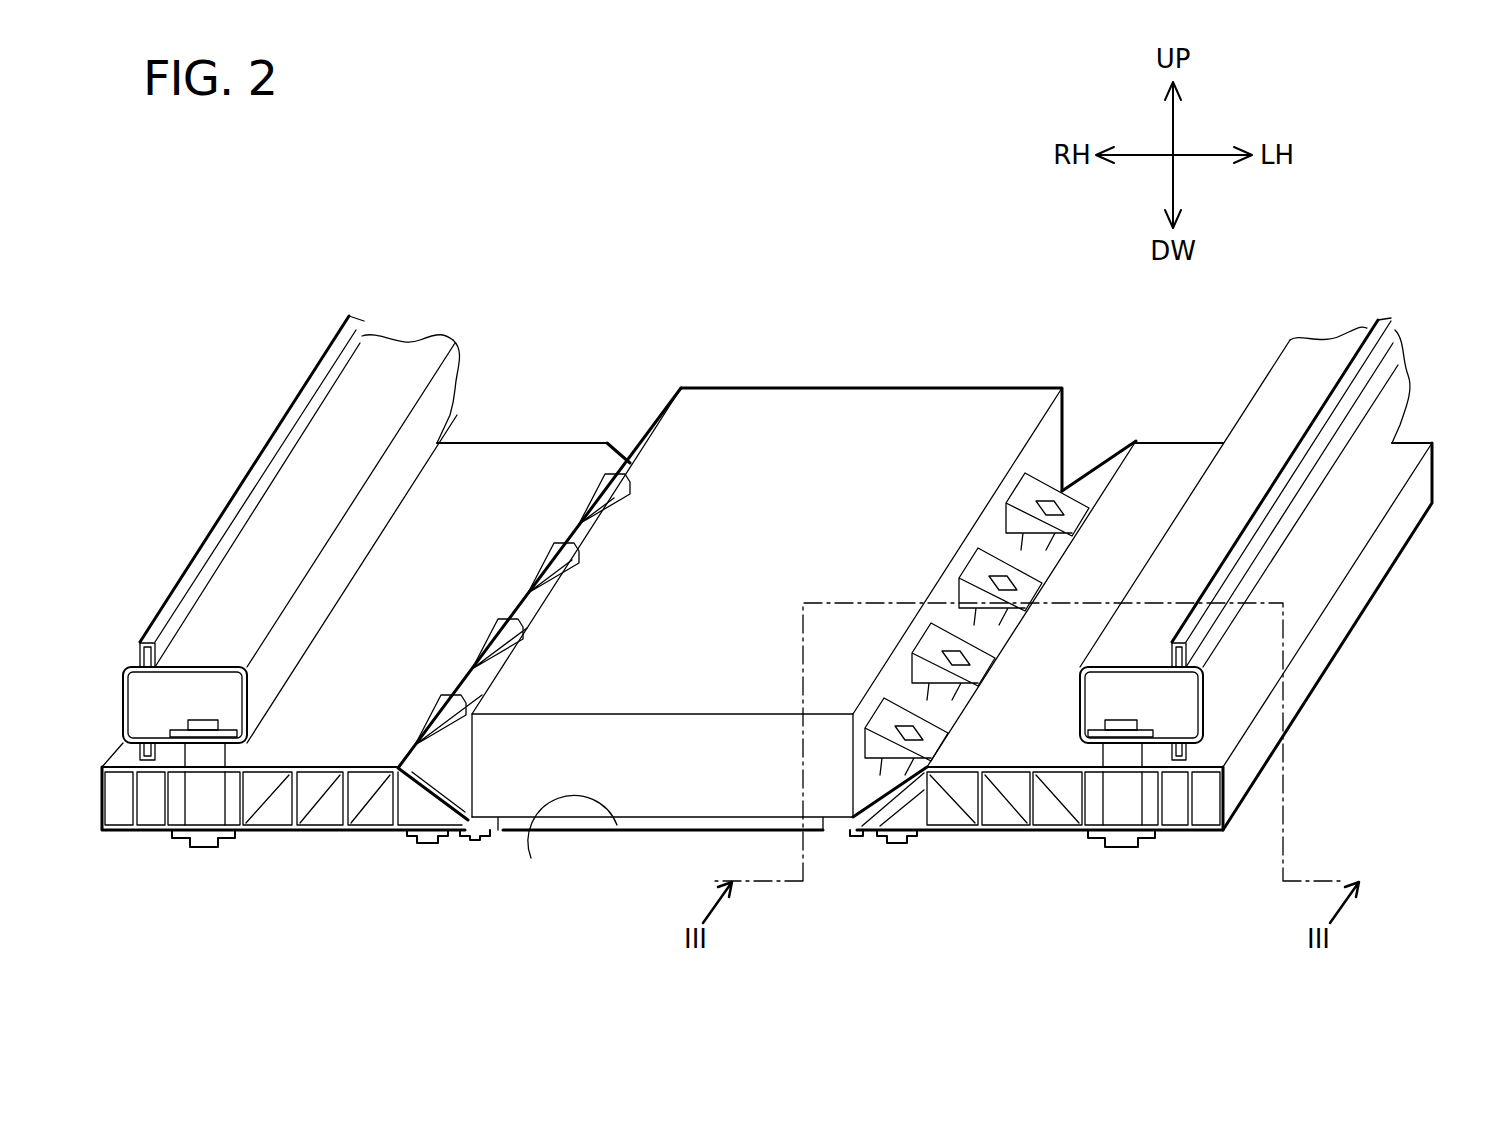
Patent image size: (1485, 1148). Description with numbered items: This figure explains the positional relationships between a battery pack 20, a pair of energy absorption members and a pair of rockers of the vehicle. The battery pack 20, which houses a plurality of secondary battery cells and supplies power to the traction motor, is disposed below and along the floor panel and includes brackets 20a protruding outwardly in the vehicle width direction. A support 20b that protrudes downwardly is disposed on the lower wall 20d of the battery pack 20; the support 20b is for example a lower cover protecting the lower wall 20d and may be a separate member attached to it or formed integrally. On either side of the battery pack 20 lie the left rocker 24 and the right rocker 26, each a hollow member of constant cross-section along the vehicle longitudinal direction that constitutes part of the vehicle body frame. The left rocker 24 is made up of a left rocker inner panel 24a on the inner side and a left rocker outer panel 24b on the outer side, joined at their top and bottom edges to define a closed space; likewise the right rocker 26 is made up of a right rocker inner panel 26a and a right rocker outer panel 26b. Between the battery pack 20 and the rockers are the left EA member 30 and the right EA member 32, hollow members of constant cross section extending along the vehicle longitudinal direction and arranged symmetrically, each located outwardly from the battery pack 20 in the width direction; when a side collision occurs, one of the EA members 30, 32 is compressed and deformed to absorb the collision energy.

The battery pack 20 is at (914, 334).
The brackets 20a is at (582, 519).
The support 20b is at (620, 820).
The lower wall 20d is at (530, 822).
The left rocker 24 is at (1360, 284).
The left rocker inner panel 24a is at (1312, 360).
The left rocker outer panel 24b is at (1400, 330).
The right rocker 26 is at (464, 296).
The right rocker inner panel 26a is at (440, 385).
The right rocker outer panel 26b is at (332, 352).
The left EA member 30 is at (1023, 872).
The right EA member 32 is at (289, 872).